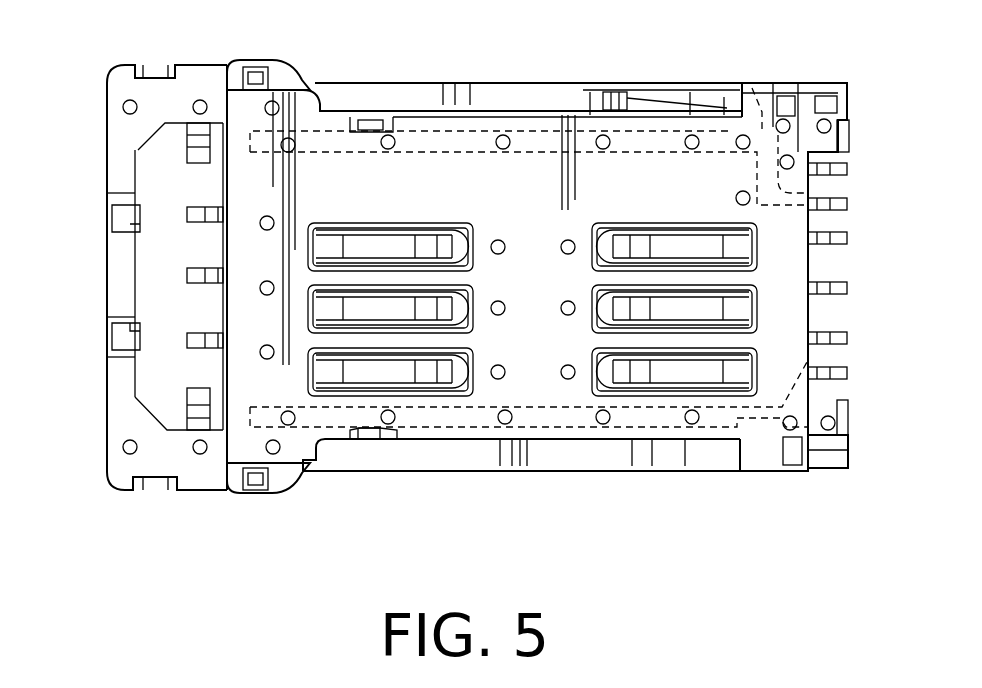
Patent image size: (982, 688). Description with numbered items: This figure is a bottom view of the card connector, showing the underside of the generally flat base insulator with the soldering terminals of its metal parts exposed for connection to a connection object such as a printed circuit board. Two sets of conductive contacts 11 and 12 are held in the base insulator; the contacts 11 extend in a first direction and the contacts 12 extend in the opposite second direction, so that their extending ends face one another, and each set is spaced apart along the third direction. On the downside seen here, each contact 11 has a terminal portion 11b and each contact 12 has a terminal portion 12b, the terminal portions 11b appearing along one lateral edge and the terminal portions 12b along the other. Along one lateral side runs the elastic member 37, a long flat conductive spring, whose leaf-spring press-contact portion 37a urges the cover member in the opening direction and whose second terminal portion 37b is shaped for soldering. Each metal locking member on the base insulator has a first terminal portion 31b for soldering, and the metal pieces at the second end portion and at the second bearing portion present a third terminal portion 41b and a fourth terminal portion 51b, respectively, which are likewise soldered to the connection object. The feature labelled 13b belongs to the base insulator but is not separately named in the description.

The conductive contact 11 is at (660, 240).
The conductive contact 12 is at (430, 236).
The terminal portion 11b is at (847, 238).
The terminal portion 12b is at (187, 215).
The terminal portion 13b is at (192, 158).
The first terminal portion 31b is at (187, 400).
The elastic member 37 is at (680, 88).
The press-contact portion 37a is at (617, 92).
The second terminal portion 37b is at (847, 204).
The third terminal portion 41b is at (847, 168).
The fourth terminal portion 51b is at (847, 372).